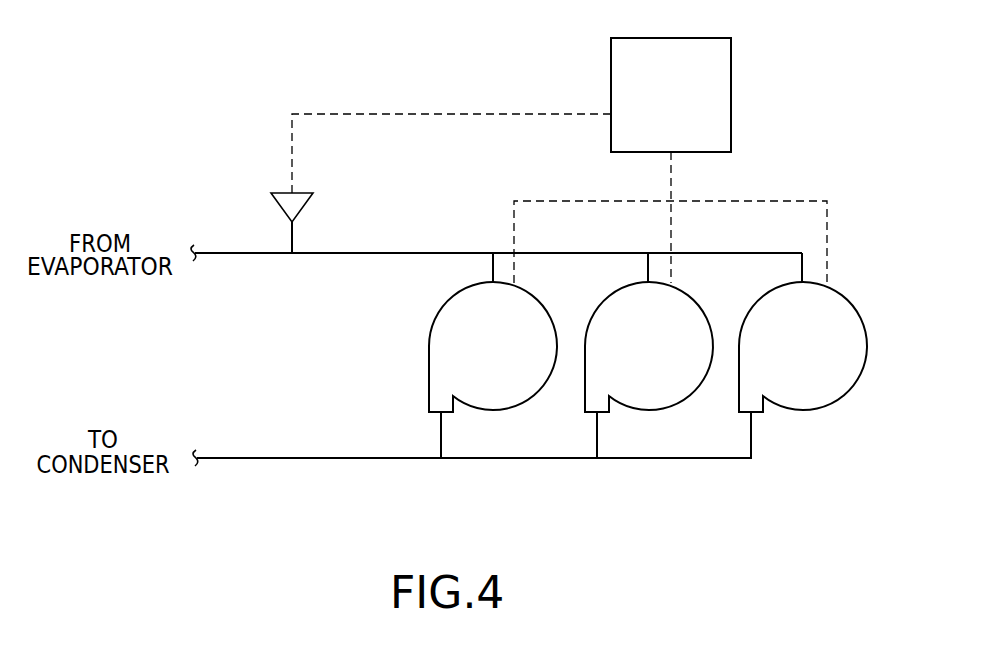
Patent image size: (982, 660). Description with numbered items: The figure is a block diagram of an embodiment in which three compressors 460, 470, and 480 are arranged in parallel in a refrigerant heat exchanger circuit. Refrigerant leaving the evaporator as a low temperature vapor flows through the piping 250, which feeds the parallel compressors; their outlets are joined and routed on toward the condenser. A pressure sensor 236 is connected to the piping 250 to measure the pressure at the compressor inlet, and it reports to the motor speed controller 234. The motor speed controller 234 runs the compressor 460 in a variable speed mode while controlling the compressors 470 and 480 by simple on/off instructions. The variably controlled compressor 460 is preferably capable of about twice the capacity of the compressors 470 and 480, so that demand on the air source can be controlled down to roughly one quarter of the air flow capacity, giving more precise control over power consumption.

The motor speed control 234 is at (731, 102).
The pressure sensor 236 is at (308, 197).
The piping 250 is at (222, 254).
The compressor 460 is at (493, 410).
The compressor 470 is at (649, 410).
The compressor 480 is at (803, 410).